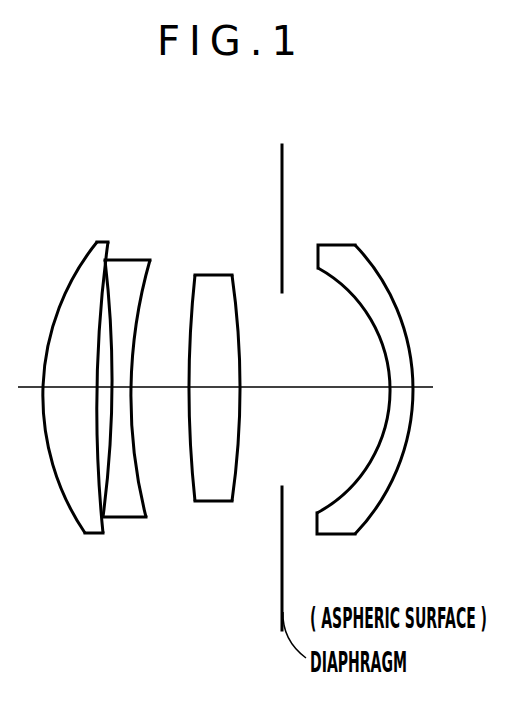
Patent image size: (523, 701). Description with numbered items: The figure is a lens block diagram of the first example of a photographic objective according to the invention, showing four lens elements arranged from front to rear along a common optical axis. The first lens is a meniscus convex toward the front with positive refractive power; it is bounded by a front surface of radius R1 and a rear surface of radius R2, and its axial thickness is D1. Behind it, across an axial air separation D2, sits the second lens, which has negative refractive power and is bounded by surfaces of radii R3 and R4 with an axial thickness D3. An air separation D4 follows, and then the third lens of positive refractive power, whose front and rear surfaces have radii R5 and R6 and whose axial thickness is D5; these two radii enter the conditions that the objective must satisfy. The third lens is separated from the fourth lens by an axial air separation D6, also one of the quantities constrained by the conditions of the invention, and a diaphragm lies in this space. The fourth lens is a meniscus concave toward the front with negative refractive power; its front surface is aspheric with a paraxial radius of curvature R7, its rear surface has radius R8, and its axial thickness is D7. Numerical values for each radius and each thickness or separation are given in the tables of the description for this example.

The radius of curvature of the first surface R1 is at (66, 504).
The radius of curvature of the second surface R2 is at (99, 496).
The radius of curvature of the third surface R3 is at (107, 494).
The radius of curvature of the fourth surface R4 is at (145, 505).
The radius of curvature of the front surface of the third lens R5 is at (195, 500).
The radius of curvature of the rear surface of the third lens R6 is at (237, 500).
The paraxial radius of curvature of the aspheric surface R7 is at (333, 515).
The radius of curvature of the eighth surface R8 is at (377, 513).
The axial thickness of the first lens D1 is at (66, 388).
The axial air separation between the first and second lenses D2 is at (98, 385).
The axial thickness of the second lens D3 is at (122, 386).
The axial air separation between the second and third lenses D4 is at (163, 387).
The axial thickness of the third lens D5 is at (211, 387).
The axial air separation between the third and fourth lenses D6 is at (304, 387).
The axial thickness of the fourth lens D7 is at (402, 386).